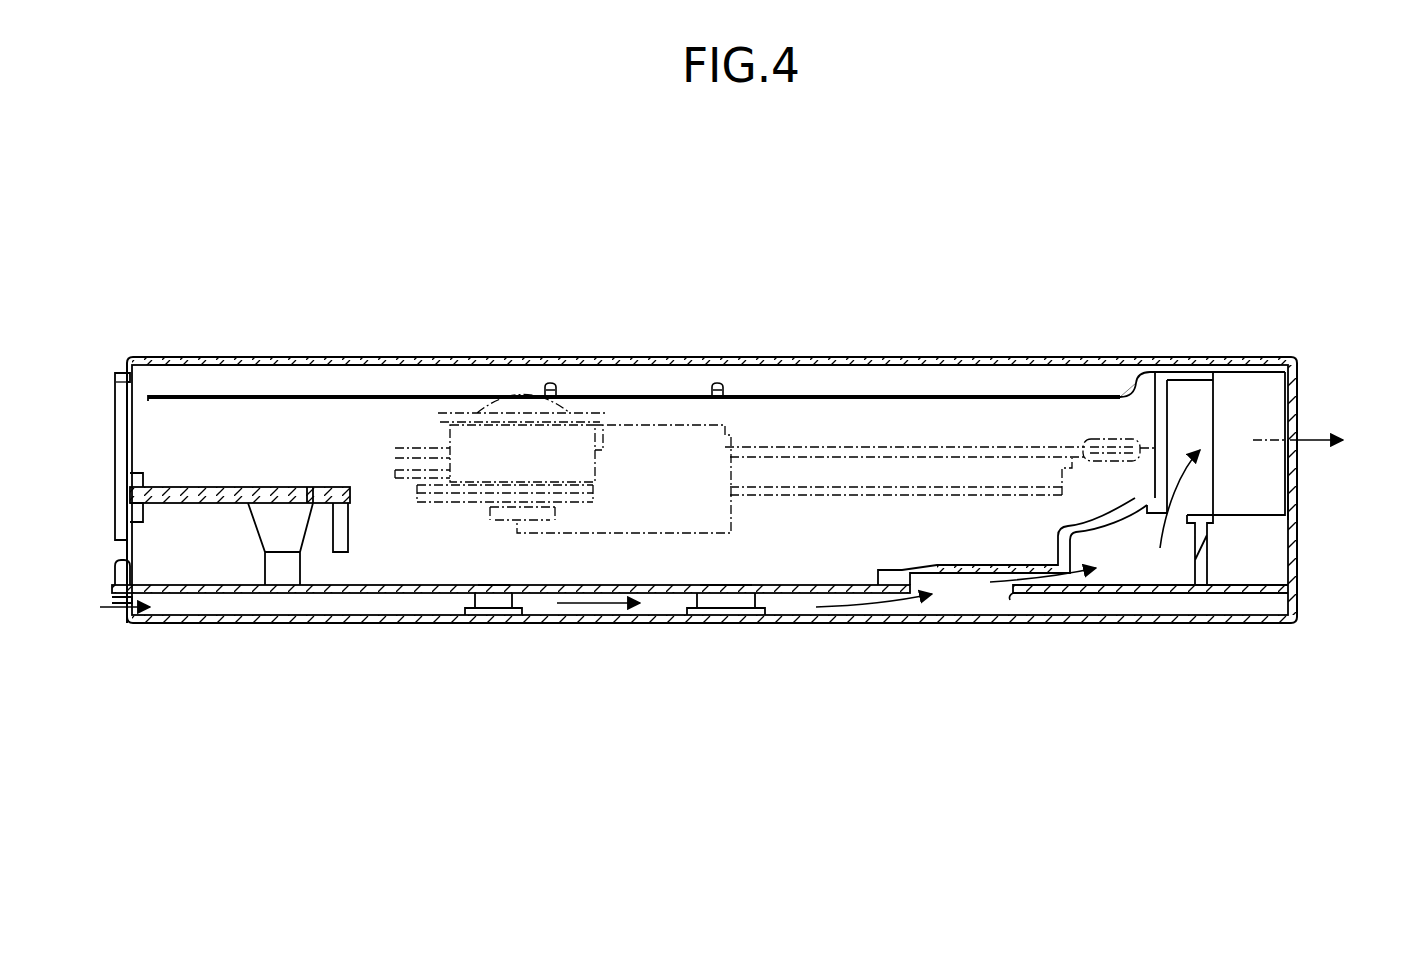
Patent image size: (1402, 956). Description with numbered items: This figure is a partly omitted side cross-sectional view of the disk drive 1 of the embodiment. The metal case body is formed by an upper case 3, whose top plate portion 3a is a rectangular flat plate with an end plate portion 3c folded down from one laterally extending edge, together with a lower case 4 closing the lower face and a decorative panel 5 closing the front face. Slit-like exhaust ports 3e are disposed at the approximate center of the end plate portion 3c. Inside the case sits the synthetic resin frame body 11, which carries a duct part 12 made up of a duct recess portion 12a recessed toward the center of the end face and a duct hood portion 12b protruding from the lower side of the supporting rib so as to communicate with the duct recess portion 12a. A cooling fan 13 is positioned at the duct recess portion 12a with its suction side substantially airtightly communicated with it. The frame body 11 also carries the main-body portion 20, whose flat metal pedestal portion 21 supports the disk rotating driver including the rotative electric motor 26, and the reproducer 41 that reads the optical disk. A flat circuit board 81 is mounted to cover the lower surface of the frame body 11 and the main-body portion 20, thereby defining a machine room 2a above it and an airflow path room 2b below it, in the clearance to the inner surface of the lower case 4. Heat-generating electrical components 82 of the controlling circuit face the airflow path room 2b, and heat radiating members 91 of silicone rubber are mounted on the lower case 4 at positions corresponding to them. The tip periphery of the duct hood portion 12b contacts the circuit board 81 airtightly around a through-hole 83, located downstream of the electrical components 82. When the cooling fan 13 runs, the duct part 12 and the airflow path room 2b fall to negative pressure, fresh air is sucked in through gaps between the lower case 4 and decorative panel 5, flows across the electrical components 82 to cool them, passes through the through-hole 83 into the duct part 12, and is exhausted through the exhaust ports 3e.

The disk drive 1 is at (808, 222).
The upper case 3 is at (213, 357).
The top plate portion 3a is at (311, 357).
The end plate portion 3c is at (1297, 393).
The exhaust ports 3e is at (1297, 512).
The machine room 2a is at (424, 375).
The airflow path room 2b is at (333, 607).
The lower case 4 is at (1217, 625).
The decorative panel 5 is at (112, 393).
The frame body 11 is at (833, 395).
The duct part 12 is at (1188, 392).
The duct recess portion 12a is at (1130, 385).
The duct hood portion 12b is at (1060, 537).
The cooling fan 13 is at (1255, 385).
The main-body portion 20 is at (668, 405).
The pedestal portion 21 is at (872, 445).
The rotative electric motor 26 is at (447, 438).
The reproducer 41 is at (731, 505).
The circuit board 81 is at (1275, 597).
The electrical components 82 is at (492, 597).
The through-hole 83 is at (1009, 598).
The heat radiating members 91 is at (497, 618).